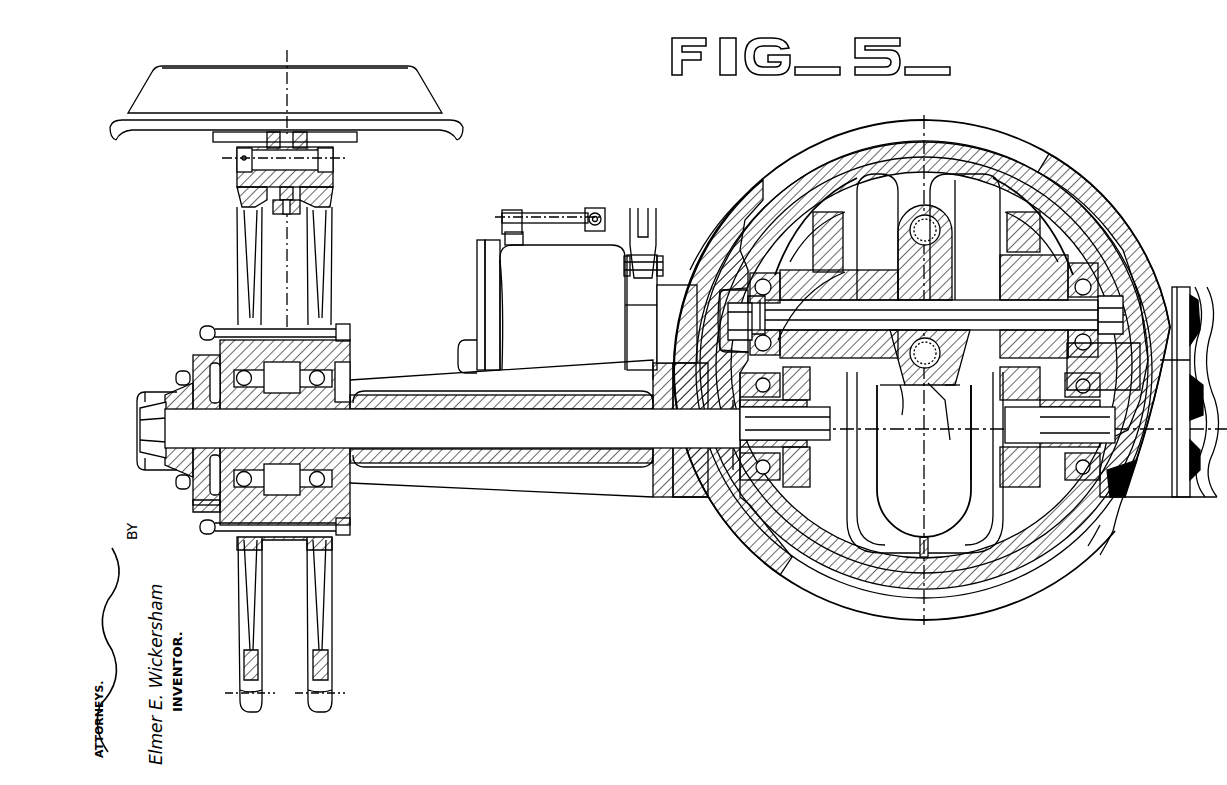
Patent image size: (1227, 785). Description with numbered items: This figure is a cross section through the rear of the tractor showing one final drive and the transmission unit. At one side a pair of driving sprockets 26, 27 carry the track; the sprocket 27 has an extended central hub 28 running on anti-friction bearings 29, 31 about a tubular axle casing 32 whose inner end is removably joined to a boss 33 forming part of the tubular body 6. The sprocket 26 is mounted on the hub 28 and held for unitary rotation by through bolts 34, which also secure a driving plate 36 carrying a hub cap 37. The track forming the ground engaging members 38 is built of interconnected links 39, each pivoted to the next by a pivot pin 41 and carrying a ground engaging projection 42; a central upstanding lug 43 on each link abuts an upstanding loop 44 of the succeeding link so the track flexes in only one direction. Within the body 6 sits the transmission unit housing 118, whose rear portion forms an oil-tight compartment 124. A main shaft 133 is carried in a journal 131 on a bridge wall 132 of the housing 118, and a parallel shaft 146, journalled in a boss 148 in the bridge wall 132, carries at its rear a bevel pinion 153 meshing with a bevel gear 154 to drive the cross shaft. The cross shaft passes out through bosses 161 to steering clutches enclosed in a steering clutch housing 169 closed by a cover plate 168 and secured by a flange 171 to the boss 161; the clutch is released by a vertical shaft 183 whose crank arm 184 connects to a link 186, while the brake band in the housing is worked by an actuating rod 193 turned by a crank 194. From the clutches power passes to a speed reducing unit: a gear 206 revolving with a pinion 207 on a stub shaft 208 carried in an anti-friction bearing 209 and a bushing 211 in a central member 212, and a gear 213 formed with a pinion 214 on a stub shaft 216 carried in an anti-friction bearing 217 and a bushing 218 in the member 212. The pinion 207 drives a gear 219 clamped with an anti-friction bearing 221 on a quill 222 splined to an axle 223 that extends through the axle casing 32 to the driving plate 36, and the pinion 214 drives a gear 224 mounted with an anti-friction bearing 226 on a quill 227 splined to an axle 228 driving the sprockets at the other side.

The tubular body 6 is at (1020, 576).
The driving sprocket 26 is at (238, 620).
The driving sprocket 27 is at (332, 620).
The central hub 28 is at (272, 362).
The anti-friction bearing 29 is at (212, 504).
The anti-friction bearing 31 is at (328, 373).
The axle casing 32 is at (420, 460).
The boss 33 is at (676, 487).
The through bolts 34 is at (232, 328).
The driving plate 36 is at (208, 366).
The hub cap 37 is at (156, 398).
The ground engaging members 38 is at (418, 83).
The links 39 is at (333, 176).
The pivot pin 41 is at (320, 162).
The ground engaging projection 42 is at (339, 72).
The upstanding lug 43 is at (282, 190).
The upstanding loop 44 is at (273, 208).
The transmission unit housing 118 is at (1075, 565).
The compartment 124 is at (940, 477).
The journal 131 is at (900, 220).
The bridge wall 132 is at (950, 190).
The main shaft 133 is at (908, 226).
The shaft 146 is at (895, 390).
The boss 148 is at (950, 392).
The bevel pinion 153 is at (905, 390).
The bevel gear 154 is at (948, 440).
The bosses 161 is at (680, 290).
The cover plate 168 is at (480, 267).
The steering clutch housing 169 is at (508, 285).
The flange 171 is at (660, 330).
The vertical shaft 183 is at (503, 238).
The crank arm 184 is at (536, 214).
The link 186 is at (594, 208).
The actuating rod 193 is at (660, 264).
The crank 194 is at (641, 208).
The gear 206 is at (800, 205).
The pinion 207 is at (780, 230).
The stub shaft 208 is at (738, 292).
The anti-friction bearing 209 is at (760, 275).
The bushing 211 is at (890, 300).
The central member 212 is at (880, 300).
The gear 213 is at (1035, 215).
The pinion 214 is at (1062, 240).
The stub shaft 216 is at (1105, 280).
The anti-friction bearing 217 is at (1080, 256).
The bushing 218 is at (965, 300).
The gear 219 is at (790, 490).
The anti-friction bearing 221 is at (760, 470).
The quill 222 is at (730, 460).
The axle 223 is at (600, 440).
The gear 224 is at (1100, 548).
The anti-friction bearing 226 is at (1118, 525).
The quill 227 is at (1043, 453).
The axle 228 is at (1120, 437).